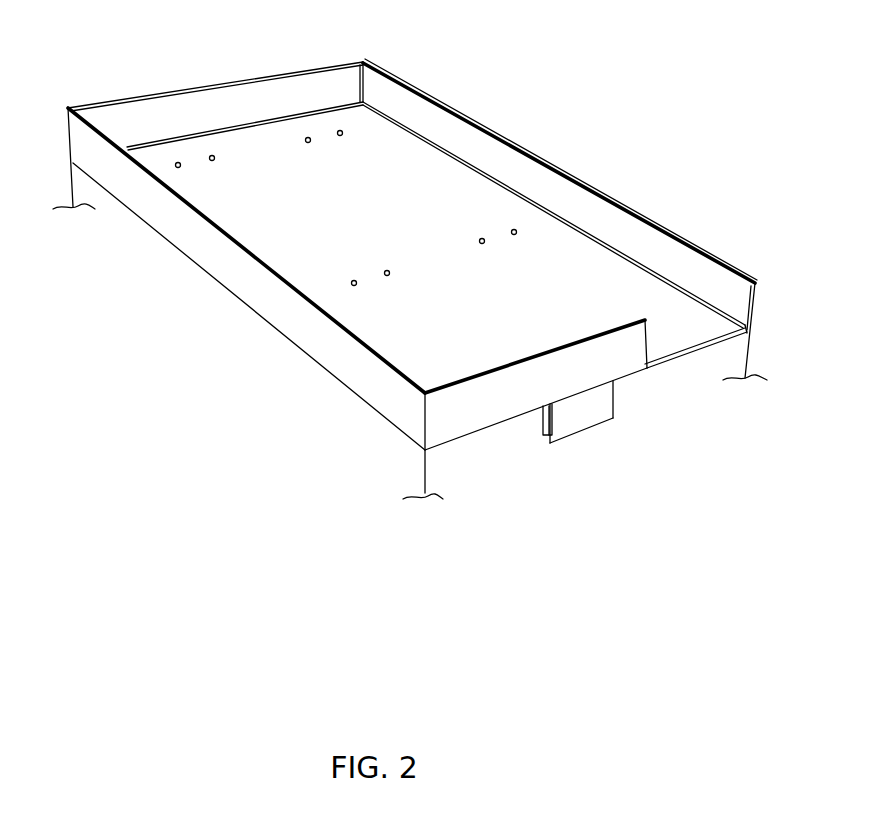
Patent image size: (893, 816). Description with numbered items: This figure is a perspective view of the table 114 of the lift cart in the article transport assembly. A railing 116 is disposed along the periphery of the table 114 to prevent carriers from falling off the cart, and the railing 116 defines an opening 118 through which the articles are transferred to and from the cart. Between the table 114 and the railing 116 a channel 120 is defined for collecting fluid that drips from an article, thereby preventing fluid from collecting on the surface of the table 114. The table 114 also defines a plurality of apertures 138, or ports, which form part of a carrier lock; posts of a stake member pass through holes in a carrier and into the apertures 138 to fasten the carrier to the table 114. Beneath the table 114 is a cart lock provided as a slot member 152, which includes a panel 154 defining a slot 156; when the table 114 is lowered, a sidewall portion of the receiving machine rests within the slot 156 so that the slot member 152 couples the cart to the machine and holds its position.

The table 114 is at (445, 173).
The railing 116 is at (572, 200).
The channel 120 is at (660, 277).
The opening 118 is at (690, 345).
The apertures 138 is at (212, 156).
The slot member 152 is at (577, 437).
The panel 154 is at (600, 415).
The slot 156 is at (535, 432).